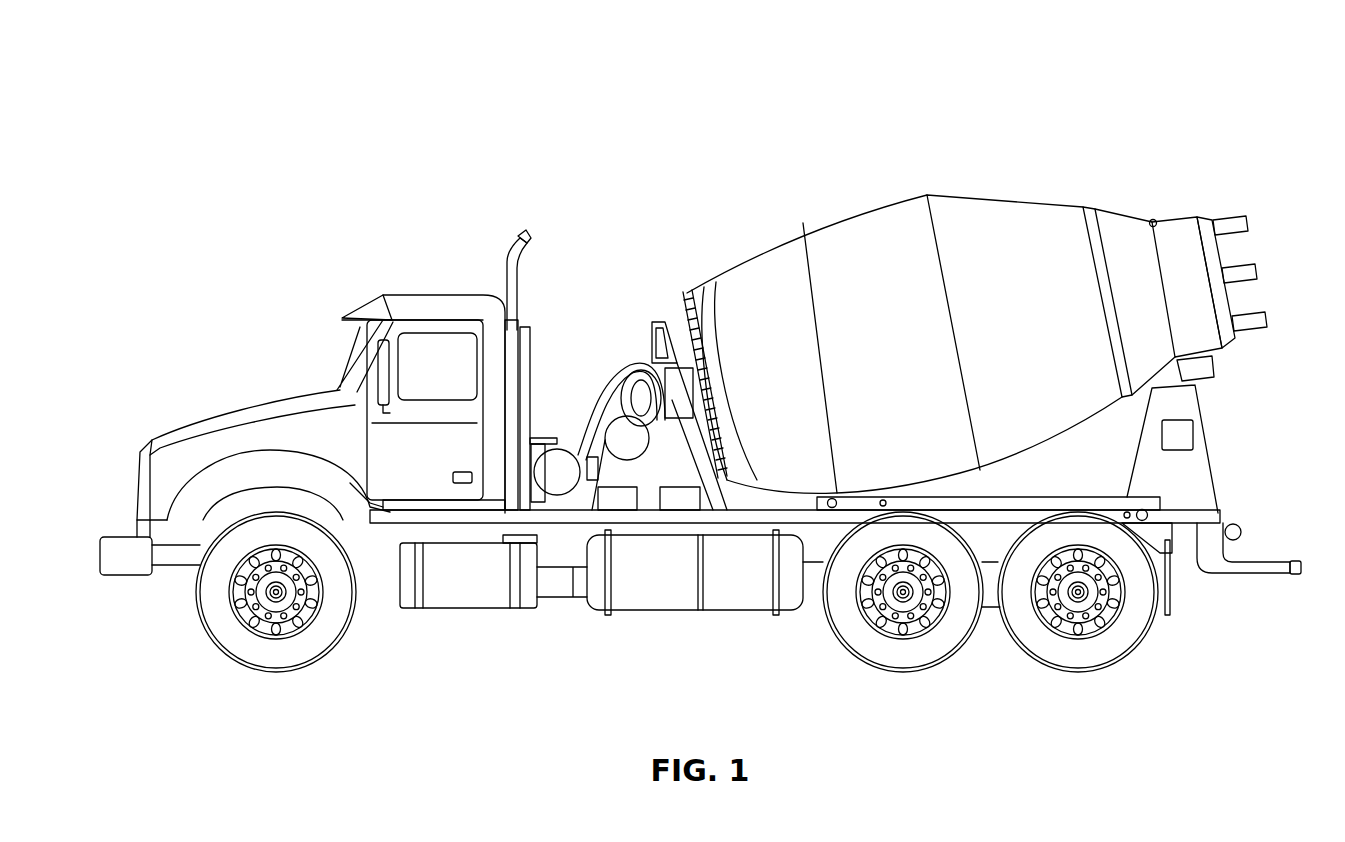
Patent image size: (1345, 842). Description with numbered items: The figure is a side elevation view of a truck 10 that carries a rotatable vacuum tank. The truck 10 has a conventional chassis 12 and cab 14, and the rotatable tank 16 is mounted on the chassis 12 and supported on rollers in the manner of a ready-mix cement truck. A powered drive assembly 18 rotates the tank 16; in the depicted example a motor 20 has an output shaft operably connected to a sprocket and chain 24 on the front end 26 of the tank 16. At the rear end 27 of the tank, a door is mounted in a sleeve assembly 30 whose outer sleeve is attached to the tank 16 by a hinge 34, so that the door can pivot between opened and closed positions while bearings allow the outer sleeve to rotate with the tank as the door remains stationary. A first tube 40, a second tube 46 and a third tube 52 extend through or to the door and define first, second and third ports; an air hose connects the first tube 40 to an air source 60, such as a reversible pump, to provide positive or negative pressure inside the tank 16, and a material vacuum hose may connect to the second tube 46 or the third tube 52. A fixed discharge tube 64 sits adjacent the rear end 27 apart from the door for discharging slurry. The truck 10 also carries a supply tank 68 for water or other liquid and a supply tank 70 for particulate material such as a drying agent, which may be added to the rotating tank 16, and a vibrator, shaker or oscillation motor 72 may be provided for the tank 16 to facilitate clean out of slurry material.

The truck 10 is at (626, 272).
The chassis 12 is at (530, 633).
The cab 14 is at (432, 292).
The rotatable tank 16 is at (862, 219).
The drive assembly 18 is at (658, 310).
The motor 20 is at (667, 393).
The sprocket and chain 24 is at (690, 304).
The front end 26 is at (737, 257).
The rear end 27 is at (1105, 212).
The sleeve assembly 30 is at (1172, 237).
The hinge 34 is at (1150, 220).
The first tube 40 is at (1247, 228).
The second tube 46 is at (1256, 275).
The third tube 52 is at (1266, 320).
The air source 60 is at (605, 495).
The discharge tube 64 is at (1205, 366).
The supply tank for water or other liquid 68 is at (627, 445).
The supply tank for particulate material 70 is at (548, 455).
The oscillation motor 72 is at (1194, 433).